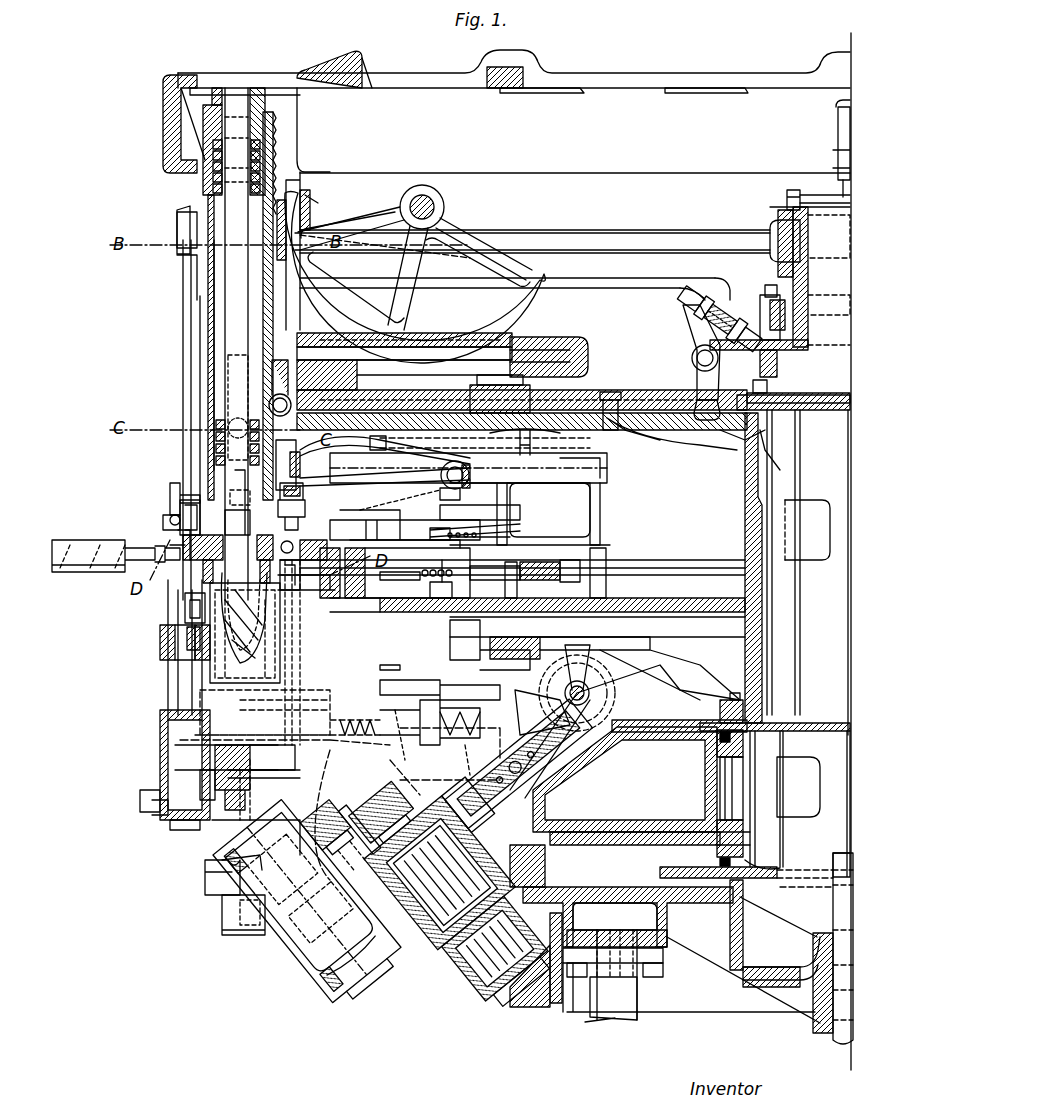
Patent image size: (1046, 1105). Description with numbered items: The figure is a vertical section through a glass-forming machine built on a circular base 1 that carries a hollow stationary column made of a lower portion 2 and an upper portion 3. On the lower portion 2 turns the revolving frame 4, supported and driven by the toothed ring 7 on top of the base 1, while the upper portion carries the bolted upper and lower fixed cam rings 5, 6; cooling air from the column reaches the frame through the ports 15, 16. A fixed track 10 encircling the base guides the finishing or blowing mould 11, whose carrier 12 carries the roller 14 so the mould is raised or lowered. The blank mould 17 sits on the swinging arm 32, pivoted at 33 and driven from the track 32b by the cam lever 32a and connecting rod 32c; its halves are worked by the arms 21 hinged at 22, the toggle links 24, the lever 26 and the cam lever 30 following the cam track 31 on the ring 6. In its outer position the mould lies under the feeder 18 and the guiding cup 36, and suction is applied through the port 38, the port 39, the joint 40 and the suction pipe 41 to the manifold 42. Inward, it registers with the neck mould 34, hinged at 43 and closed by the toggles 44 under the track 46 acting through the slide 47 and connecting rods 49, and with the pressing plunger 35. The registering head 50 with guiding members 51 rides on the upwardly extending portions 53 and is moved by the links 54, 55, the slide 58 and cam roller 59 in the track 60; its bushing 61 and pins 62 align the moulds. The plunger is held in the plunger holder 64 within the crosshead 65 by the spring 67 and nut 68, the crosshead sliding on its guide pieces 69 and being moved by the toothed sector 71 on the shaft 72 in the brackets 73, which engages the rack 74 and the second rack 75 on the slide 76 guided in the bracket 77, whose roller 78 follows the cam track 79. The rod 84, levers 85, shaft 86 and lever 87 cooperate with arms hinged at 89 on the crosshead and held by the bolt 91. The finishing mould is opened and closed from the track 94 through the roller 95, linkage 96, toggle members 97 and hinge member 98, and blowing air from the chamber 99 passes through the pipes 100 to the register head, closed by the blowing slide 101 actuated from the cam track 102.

The circular base 1 is at (603, 893).
The lower portion of the column 2 is at (744, 850).
The upper portion of the column 3 is at (762, 448).
The revolving frame 4 is at (570, 755).
The upper fixed cam ring 5 is at (622, 420).
The lower fixed cam ring 6 is at (612, 607).
The toothed ring 7 is at (575, 795).
The fixed track 10 is at (540, 975).
The finishing or blowing mould 11 is at (310, 905).
The carrier 12 is at (519, 763).
The roller 14 is at (466, 906).
The port 15 is at (722, 787).
The port 16 is at (760, 788).
The blank mould 17 is at (300, 660).
The feeder 18 is at (605, 690).
The arms 21 is at (170, 670).
The hinge 22 is at (175, 690).
The toggle links 24 is at (460, 494).
The lever 26 is at (318, 500).
The cam lever 30 is at (510, 500).
The cam track 31 is at (480, 585).
The swinging arm 32 is at (160, 760).
The cam lever 32a is at (470, 670).
The track 32b is at (500, 640).
The connecting rod 32c is at (470, 720).
The pivot 33 is at (230, 890).
The neck mould 34 is at (272, 593).
The pressing plunger 35 is at (262, 600).
The guiding cup 36 is at (90, 556).
The port 38 is at (298, 707).
The port 39 is at (258, 765).
The joint 40 is at (232, 922).
The suction pipe 41 is at (595, 245).
The manifold 42 is at (790, 240).
The hinge 43 is at (385, 522).
The toggles 44 is at (430, 535).
The track 46 is at (462, 562).
The slide 47 is at (600, 545).
The connecting rods 49 is at (385, 580).
The registering head 50 is at (183, 530).
The guiding members 51 is at (345, 455).
The upwardly extending portions 53 is at (275, 104).
The link 54 is at (225, 462).
The link 55 is at (215, 505).
The slide 58 is at (545, 452).
The cam roller 59 is at (530, 445).
The track 60 is at (556, 430).
The bushing 61 is at (176, 580).
The pins 62 is at (183, 600).
The plunger holder 64 is at (232, 325).
The plunger crosshead 65 is at (230, 338).
The spring 67 is at (215, 440).
The nut or collar 68 is at (200, 126).
The guide pieces 69 is at (210, 250).
The toothed sector 71 is at (340, 200).
The shaft 72 is at (418, 200).
The brackets 73 is at (310, 200).
The toothed rack 74 is at (292, 195).
The second rack 75 is at (545, 318).
The slide 76 is at (565, 348).
The bracket 77 is at (378, 370).
The roller 78 is at (505, 398).
The cam track 79 is at (440, 400).
The rod 84 is at (183, 404).
The levers 85 is at (185, 225).
The shaft 86 is at (215, 312).
The lever 87 is at (312, 215).
The hinge 89 is at (300, 466).
The bolt 91 is at (292, 398).
The track 94 is at (535, 625).
The roller 95 is at (510, 580).
The linkage 96 is at (515, 705).
The toggle members 97 is at (378, 814).
The hinge member 98 is at (336, 839).
The chamber 99 is at (798, 330).
The pipes 100 is at (667, 282).
The blowing slide 101 is at (430, 474).
The cam track 102 is at (380, 455).